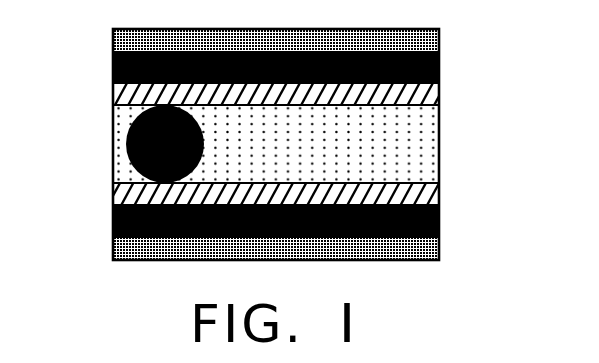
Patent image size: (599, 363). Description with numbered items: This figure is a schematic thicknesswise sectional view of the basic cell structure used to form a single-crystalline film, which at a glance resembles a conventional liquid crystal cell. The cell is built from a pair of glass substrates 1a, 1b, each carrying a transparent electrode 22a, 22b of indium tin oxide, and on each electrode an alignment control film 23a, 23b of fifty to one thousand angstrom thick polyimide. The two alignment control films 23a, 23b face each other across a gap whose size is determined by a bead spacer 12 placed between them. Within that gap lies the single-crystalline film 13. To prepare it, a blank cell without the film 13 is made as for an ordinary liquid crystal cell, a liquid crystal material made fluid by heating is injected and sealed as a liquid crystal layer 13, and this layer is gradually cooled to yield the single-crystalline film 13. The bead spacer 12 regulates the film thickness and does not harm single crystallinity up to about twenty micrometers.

The glass substrate 1a is at (439, 42).
The transparent electrode 22a is at (439, 68).
The alignment control film 23a is at (439, 97).
The single-crystalline film 13 is at (422, 143).
The bead spacer 12 is at (126, 144).
The alignment control film 23b is at (439, 197).
The transparent electrode 22b is at (439, 228).
The glass substrate 1b is at (439, 258).